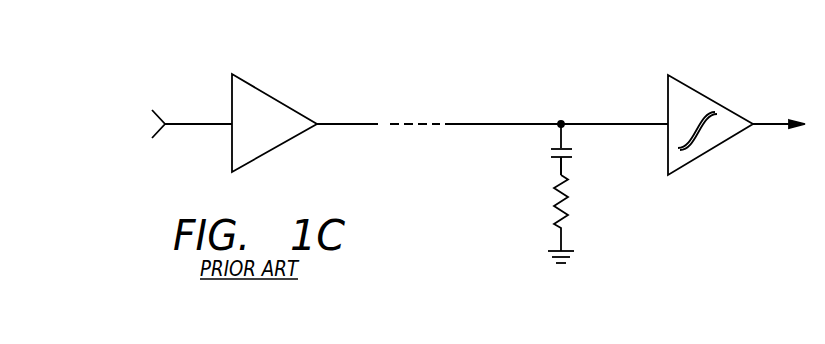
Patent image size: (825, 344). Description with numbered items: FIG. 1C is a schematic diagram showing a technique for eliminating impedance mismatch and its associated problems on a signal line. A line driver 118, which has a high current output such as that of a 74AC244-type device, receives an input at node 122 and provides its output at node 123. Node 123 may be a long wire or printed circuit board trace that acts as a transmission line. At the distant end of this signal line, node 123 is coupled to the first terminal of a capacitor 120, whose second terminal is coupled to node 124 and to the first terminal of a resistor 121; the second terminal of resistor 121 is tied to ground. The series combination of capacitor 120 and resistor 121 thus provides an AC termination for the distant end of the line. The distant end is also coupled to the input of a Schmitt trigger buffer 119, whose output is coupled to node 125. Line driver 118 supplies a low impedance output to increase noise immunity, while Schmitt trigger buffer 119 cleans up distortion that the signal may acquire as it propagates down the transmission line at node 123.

The line driver 118 is at (265, 93).
The Schmitt trigger buffer 119 is at (710, 98).
The capacitor 120 is at (553, 158).
The resistor 121 is at (568, 198).
The node 122 is at (203, 123).
The node 123 is at (347, 126).
The node 124 is at (563, 167).
The node 125 is at (775, 128).